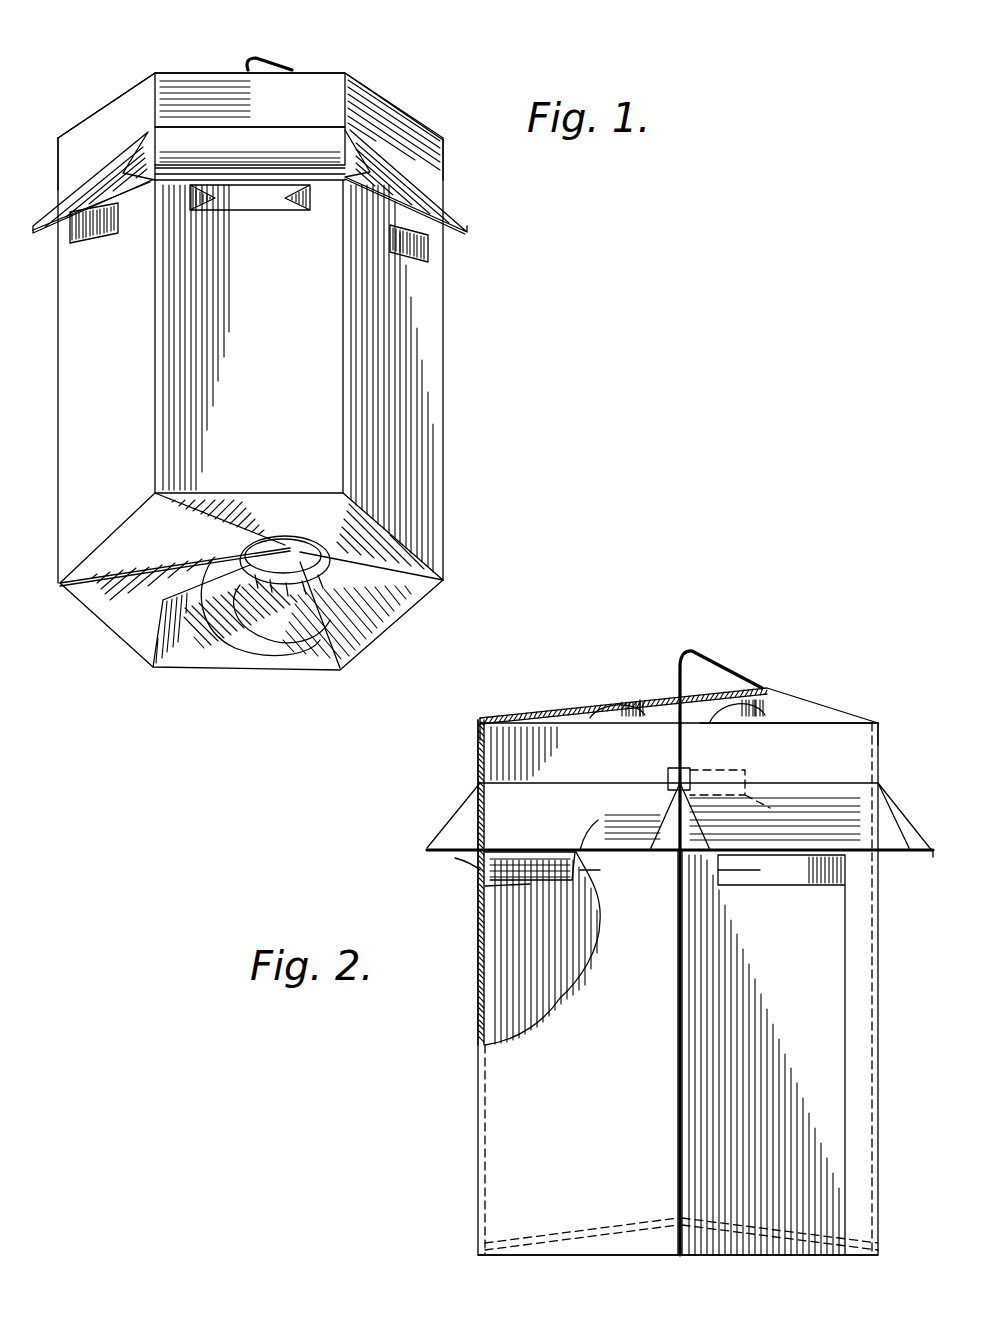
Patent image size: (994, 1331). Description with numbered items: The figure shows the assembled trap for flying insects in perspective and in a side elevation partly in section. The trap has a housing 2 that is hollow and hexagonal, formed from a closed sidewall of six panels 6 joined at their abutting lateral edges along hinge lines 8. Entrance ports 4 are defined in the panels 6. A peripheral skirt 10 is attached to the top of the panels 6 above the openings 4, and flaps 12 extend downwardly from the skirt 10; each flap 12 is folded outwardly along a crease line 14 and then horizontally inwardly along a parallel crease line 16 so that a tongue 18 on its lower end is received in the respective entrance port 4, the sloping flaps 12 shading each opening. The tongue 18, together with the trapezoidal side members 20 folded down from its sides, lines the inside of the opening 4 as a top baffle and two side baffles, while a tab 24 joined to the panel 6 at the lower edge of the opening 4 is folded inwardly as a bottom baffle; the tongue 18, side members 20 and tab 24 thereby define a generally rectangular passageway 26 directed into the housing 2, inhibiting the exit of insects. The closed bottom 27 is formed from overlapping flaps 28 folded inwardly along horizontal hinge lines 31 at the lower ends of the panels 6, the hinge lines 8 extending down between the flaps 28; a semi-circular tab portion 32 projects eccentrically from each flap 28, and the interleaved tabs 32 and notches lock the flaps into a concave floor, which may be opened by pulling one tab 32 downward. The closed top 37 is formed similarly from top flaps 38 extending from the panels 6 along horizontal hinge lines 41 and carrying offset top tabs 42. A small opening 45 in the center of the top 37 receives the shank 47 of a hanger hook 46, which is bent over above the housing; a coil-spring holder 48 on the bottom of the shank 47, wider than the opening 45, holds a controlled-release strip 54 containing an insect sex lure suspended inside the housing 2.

In FIG. 1, the housing 2 is at (492, 322).
In FIG. 1, the entrance ports 4 is at (105, 243).
In FIG. 2, the entrance ports 4 is at (482, 890).
In FIG. 1, the panels 6 is at (108, 362).
In FIG. 2, the panels 6 is at (478, 1050).
In FIG. 1, the hinge lines 8 is at (58, 438).
In FIG. 2, the hinge lines 8 is at (676, 1145).
In FIG. 1, the peripheral skirt 10 is at (432, 128).
In FIG. 2, the peripheral skirt 10 is at (472, 753).
In FIG. 1, the flaps 12 is at (68, 178).
In FIG. 2, the flaps 12 is at (642, 810).
In FIG. 1, the crease line 14 is at (92, 152).
In FIG. 2, the crease line 14 is at (475, 788).
In FIG. 1, the crease line 16 is at (60, 218).
In FIG. 2, the crease line 16 is at (428, 851).
In FIG. 1, the tongue 18 is at (128, 222).
In FIG. 2, the tongue 18 is at (458, 866).
In FIG. 1, the side members 20 is at (78, 236).
In FIG. 2, the side members 20 is at (590, 882).
In FIG. 2, the tab 24 is at (500, 935).
In FIG. 2, the passageway 26 is at (602, 858).
In FIG. 1, the closed bottom 27 is at (218, 722).
In FIG. 2, the closed bottom 27 is at (722, 1265).
In FIG. 1, the flaps 28 is at (160, 552).
In FIG. 2, the flaps 28 is at (612, 1245).
In FIG. 1, the hinge lines 31 is at (215, 500).
In FIG. 1, the semi-circular tab portion 32 is at (318, 540).
In FIG. 2, the closed top 37 is at (805, 715).
In FIG. 2, the top flaps 38 is at (585, 705).
In FIG. 1, the hinge line 41 is at (96, 105).
In FIG. 2, the hinge line 41 is at (482, 720).
In FIG. 2, the top tabs 42 is at (622, 712).
In FIG. 2, the opening 45 is at (640, 695).
In FIG. 1, the hanger hook 46 is at (270, 58).
In FIG. 2, the hanger hook 46 is at (735, 668).
In FIG. 2, the shank 47 is at (632, 698).
In FIG. 2, the coil-spring holder 48 is at (678, 778).
In FIG. 2, the controlled-release strip 54 is at (747, 792).